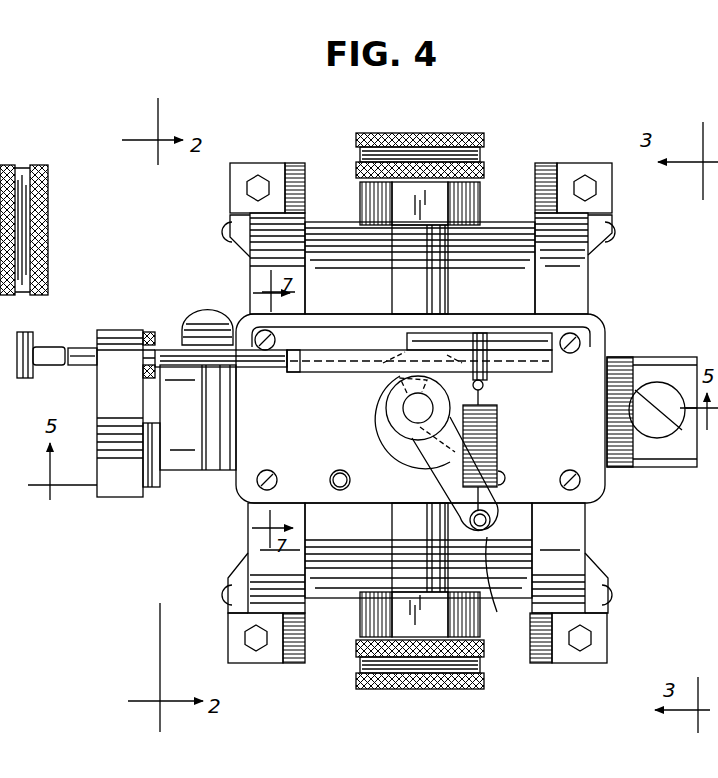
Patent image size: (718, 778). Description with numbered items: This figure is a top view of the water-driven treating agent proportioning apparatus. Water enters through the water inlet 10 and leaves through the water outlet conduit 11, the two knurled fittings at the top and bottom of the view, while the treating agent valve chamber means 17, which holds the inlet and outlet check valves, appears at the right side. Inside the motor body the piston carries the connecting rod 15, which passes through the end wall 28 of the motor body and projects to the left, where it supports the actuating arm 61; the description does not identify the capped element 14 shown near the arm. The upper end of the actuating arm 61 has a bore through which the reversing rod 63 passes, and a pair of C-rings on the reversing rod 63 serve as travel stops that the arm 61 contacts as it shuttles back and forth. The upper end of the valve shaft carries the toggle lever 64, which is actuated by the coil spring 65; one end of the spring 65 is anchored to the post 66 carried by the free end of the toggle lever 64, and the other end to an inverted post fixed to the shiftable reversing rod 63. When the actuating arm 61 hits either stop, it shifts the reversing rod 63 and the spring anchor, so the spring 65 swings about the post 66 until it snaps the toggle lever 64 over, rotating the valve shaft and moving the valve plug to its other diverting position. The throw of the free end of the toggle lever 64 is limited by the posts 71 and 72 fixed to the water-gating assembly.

The water inlet 10 is at (427, 690).
The water outlet conduit 11 is at (420, 133).
The cap 14 is at (165, 320).
The connecting rod 15 is at (150, 447).
The treating agent valve chamber means 17 is at (655, 468).
The end wall 28 is at (253, 542).
The actuating arm 61 is at (122, 329).
The reversing rod 63 is at (540, 360).
The toggle lever 64 is at (433, 477).
The coil spring 65 is at (498, 440).
The post 66 is at (503, 587).
The post 71 is at (340, 470).
The post 72 is at (506, 479).